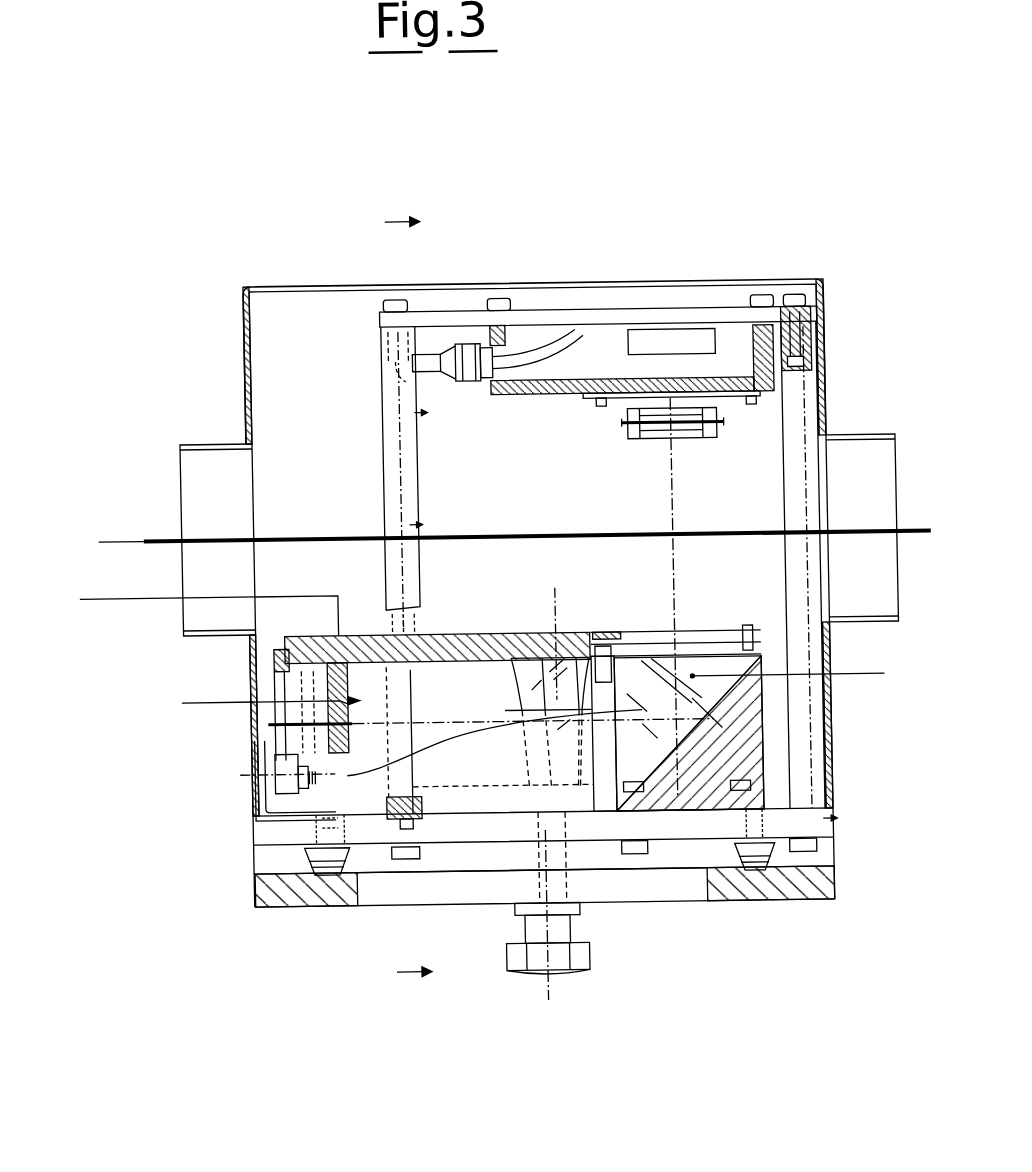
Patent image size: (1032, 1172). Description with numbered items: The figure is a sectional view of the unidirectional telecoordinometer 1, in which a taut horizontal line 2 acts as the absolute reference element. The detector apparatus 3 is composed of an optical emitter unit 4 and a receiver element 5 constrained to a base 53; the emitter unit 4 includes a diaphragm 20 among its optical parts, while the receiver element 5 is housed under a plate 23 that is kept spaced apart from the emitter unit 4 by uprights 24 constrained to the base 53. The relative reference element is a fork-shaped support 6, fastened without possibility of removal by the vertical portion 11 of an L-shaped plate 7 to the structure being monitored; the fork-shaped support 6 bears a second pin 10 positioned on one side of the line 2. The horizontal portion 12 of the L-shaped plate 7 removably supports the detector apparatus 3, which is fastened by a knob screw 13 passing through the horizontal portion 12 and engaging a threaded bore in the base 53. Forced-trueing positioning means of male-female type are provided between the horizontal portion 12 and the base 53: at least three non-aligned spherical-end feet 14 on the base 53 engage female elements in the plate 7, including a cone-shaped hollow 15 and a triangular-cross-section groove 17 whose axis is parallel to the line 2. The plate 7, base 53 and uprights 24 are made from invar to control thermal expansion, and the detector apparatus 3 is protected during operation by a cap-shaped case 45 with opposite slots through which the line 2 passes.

The unidirectional telecoordinometer 1 is at (136, 120).
The taut horizontal line 2 is at (150, 531).
The detector apparatus 3 is at (846, 787).
The optical emitter unit 4 is at (522, 632).
The receiver element 5 is at (659, 341).
The fork-shaped support 6 is at (633, 431).
The L-shaped plate 7 is at (244, 880).
The second pin 10 is at (698, 439).
The vertical portion 11 is at (288, 341).
The horizontal portion 12 is at (653, 887).
The knob screw 13 is at (523, 960).
The spherical-end feet 14 is at (285, 858).
The cone-shaped hollow 15 is at (327, 875).
The triangular-cross-section groove 17 is at (735, 878).
The diaphragm 20 is at (365, 633).
The plate 23 is at (573, 325).
The uprights 24 is at (386, 412).
The cap-shaped case 45 is at (754, 283).
The base 53 is at (458, 834).